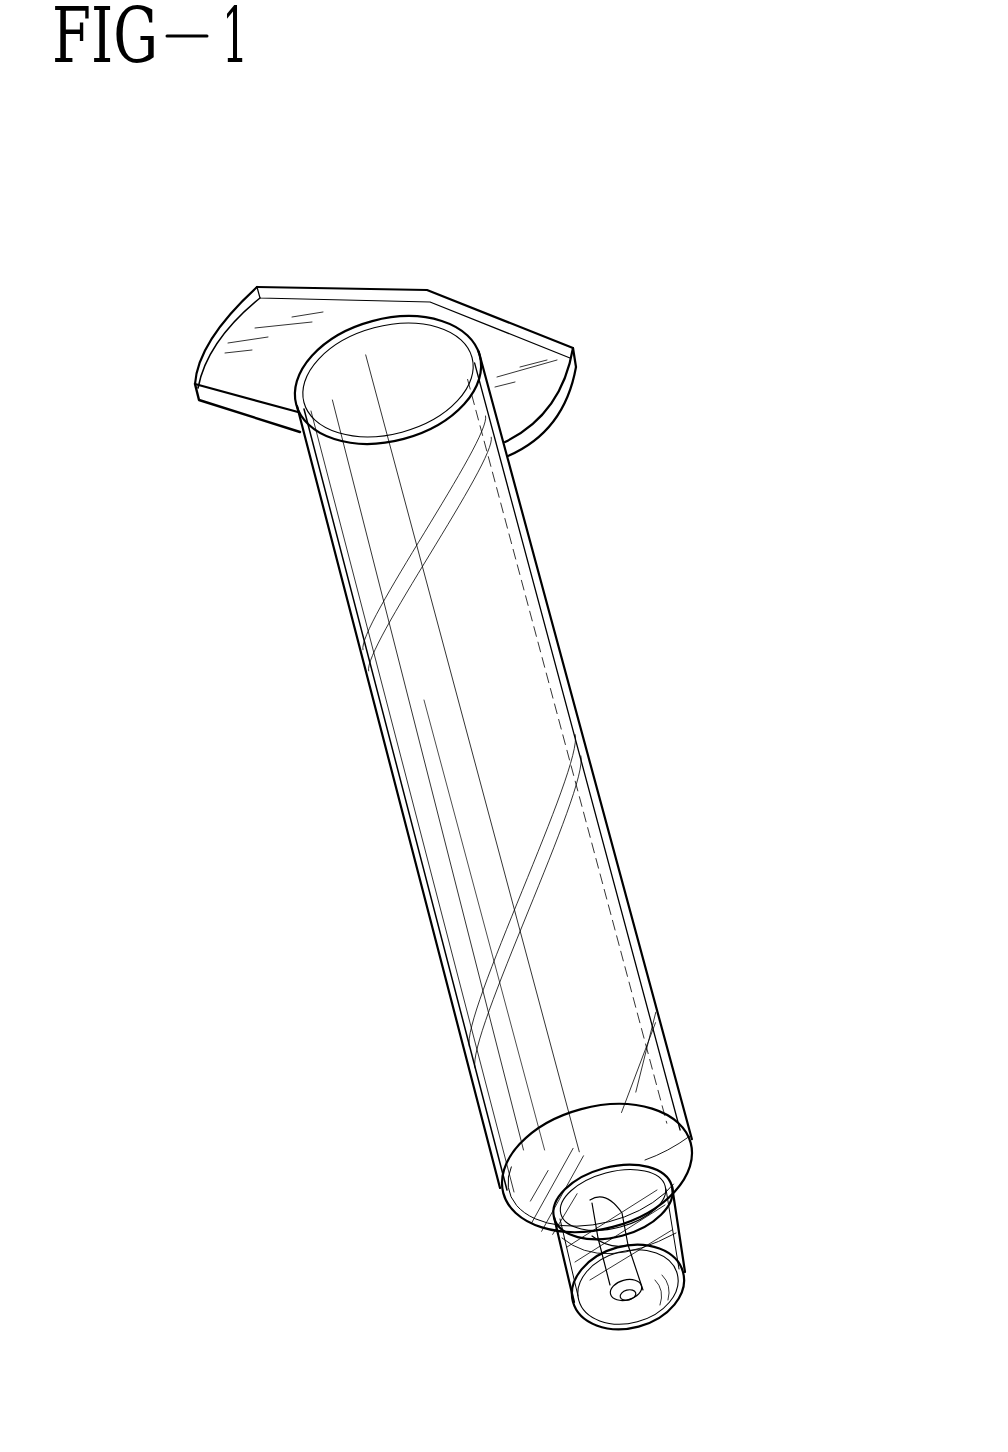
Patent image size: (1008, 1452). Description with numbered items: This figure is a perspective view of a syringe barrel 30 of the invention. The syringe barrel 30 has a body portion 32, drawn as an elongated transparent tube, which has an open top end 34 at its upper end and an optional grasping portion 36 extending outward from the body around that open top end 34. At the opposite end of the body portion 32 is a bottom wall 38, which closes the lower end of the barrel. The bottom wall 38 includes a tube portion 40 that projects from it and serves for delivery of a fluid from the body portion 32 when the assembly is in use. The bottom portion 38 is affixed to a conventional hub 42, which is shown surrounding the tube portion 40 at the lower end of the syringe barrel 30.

The syringe barrel 30 is at (817, 510).
The body portion 32 is at (565, 663).
The open top end 34 is at (382, 385).
The grasping portion 36 is at (527, 383).
The bottom wall 38 is at (693, 1173).
The tube portion 40 is at (557, 1227).
The hub 42 is at (680, 1242).